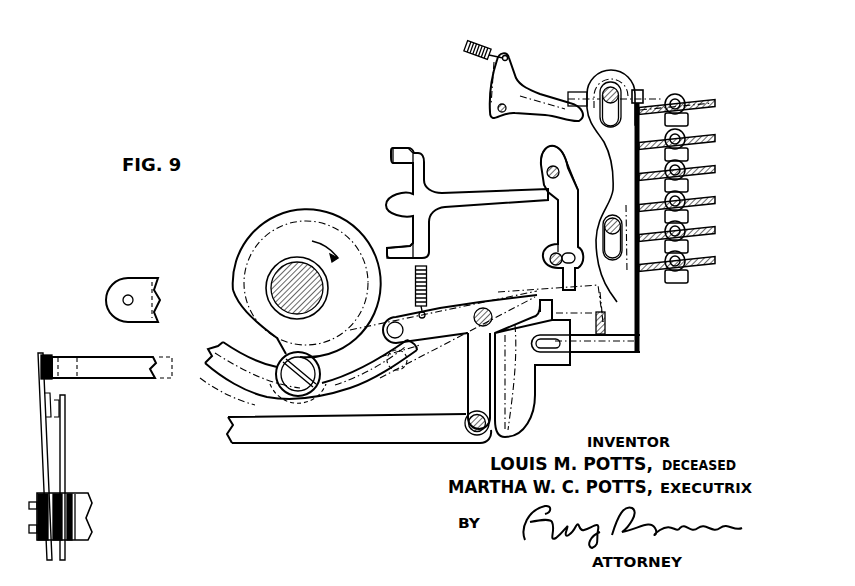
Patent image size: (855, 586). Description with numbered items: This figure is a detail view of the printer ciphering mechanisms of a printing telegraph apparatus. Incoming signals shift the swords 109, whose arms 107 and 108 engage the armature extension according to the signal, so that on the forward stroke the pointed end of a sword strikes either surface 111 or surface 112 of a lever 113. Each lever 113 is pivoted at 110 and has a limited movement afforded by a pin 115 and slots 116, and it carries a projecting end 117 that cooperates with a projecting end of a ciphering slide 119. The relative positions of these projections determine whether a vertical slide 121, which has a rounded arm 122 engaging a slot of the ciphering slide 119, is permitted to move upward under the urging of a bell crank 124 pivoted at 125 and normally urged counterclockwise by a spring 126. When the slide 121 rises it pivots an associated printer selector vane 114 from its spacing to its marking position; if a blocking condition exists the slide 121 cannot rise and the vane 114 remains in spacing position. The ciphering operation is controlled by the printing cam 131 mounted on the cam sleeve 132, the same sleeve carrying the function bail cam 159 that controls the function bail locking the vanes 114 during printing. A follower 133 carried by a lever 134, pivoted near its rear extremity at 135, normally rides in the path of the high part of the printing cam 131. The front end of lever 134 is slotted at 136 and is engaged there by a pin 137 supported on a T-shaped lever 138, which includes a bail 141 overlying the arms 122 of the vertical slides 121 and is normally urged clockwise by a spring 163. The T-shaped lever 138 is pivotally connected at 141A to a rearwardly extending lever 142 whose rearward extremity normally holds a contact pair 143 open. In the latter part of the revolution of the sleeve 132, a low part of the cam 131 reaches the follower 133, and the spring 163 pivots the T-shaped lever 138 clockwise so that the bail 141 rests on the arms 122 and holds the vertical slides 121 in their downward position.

The arm of sword 107 is at (400, 151).
The arm of sword 108 is at (397, 242).
The sword 109 is at (492, 192).
The pivot of lever 110 is at (551, 170).
The surface of lever 111 is at (546, 150).
The surface of lever 112 is at (568, 168).
The lever 113 is at (567, 197).
The printer selector vane 114 is at (711, 132).
The pin 115 is at (555, 245).
The slot 116 is at (552, 260).
The projecting end of lever 117 is at (560, 297).
The ciphering slide 119 is at (530, 384).
The vertical slide 121 is at (636, 297).
The rounded arm of vertical slide 122 is at (590, 347).
The bell crank 124 is at (527, 92).
The pivot of bell crank 125 is at (497, 108).
The spring 126 is at (487, 44).
The printing cam 131 is at (262, 246).
The cam sleeve 132 is at (282, 280).
The follower 133 is at (300, 354).
The lever 134 is at (237, 385).
The pivot of lever 135 is at (123, 300).
The slot 136 is at (447, 317).
The pin 137 is at (421, 343).
The T-shaped lever 138 is at (436, 303).
The bail 141 is at (641, 341).
The pivotal connection 141A is at (480, 438).
The rearwardly extending lever 142 is at (320, 436).
The contact pair 143 is at (56, 414).
The function bail cam 159 is at (343, 216).
The spring 163 is at (426, 268).